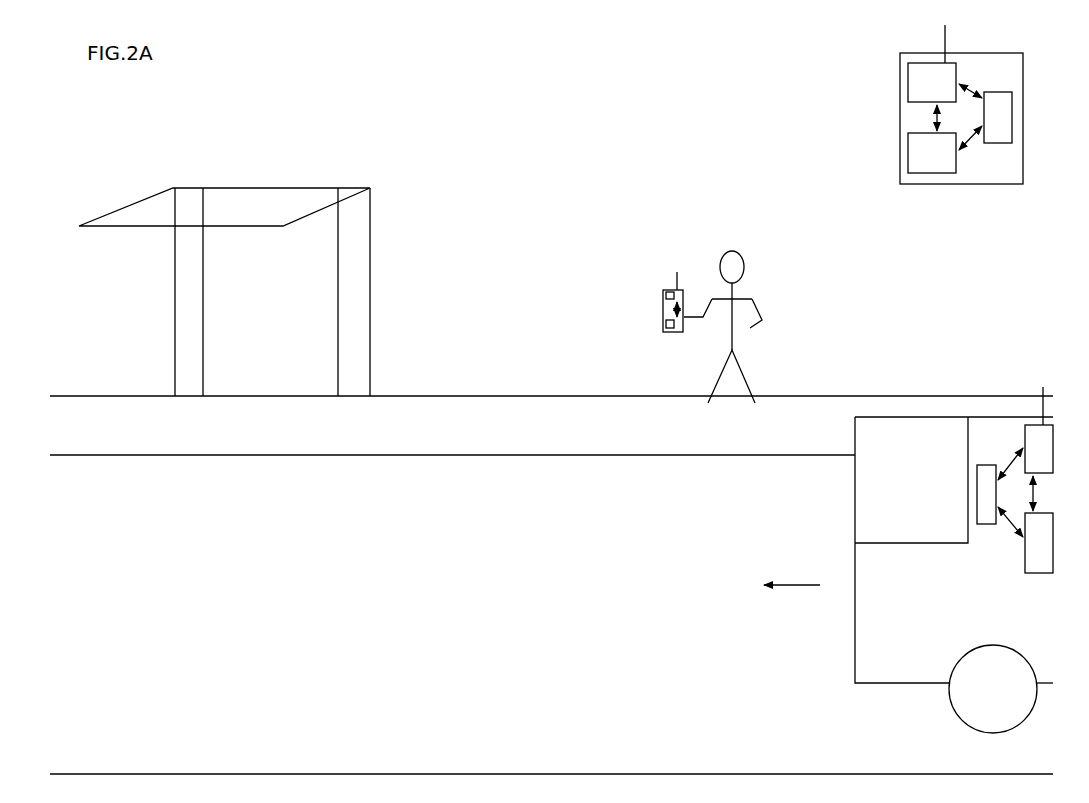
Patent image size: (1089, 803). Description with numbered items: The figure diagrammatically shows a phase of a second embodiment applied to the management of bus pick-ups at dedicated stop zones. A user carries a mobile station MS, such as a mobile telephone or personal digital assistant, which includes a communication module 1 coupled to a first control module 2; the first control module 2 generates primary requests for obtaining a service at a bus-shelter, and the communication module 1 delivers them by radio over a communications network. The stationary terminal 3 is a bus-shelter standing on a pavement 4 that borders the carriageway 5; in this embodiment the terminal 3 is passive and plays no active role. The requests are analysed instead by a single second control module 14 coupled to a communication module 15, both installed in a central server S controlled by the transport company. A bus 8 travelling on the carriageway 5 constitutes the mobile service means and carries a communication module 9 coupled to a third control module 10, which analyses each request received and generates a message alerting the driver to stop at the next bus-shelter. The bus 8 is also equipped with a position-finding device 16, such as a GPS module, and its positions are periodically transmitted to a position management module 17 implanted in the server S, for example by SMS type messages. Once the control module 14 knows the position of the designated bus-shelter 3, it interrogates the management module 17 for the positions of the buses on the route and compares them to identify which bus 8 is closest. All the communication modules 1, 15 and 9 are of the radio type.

The communication module 1 is at (666, 300).
The first control module 2 is at (664, 322).
The stationary terminal 3 is at (370, 238).
The pavement 4 is at (518, 440).
The carriageway 5 is at (339, 616).
The bus 8 is at (932, 553).
The communication module 9 is at (1025, 437).
The third control module 10 is at (1043, 573).
The second control module 14 is at (940, 173).
The communication module 15 is at (908, 82).
The position-finding device 16 is at (987, 524).
The position management module 17 is at (993, 143).
The mobile station MS is at (644, 324).
The central server S is at (924, 134).